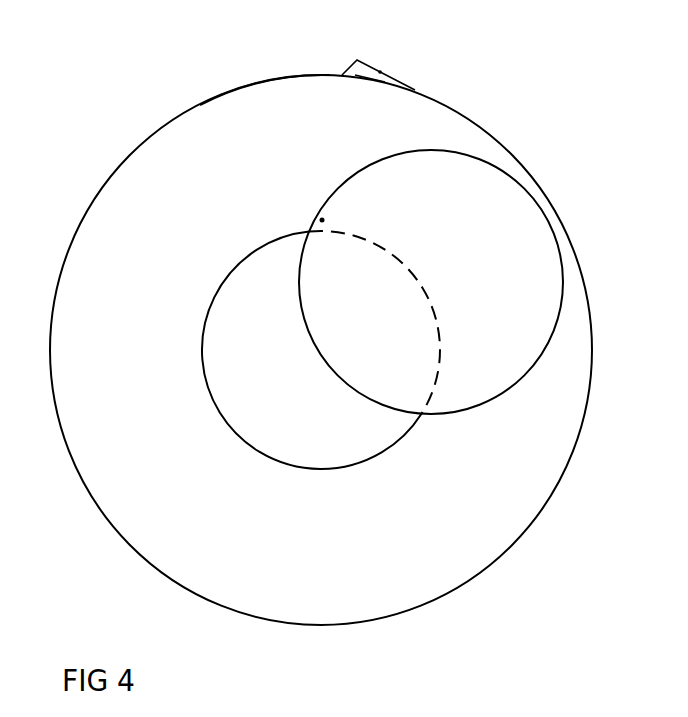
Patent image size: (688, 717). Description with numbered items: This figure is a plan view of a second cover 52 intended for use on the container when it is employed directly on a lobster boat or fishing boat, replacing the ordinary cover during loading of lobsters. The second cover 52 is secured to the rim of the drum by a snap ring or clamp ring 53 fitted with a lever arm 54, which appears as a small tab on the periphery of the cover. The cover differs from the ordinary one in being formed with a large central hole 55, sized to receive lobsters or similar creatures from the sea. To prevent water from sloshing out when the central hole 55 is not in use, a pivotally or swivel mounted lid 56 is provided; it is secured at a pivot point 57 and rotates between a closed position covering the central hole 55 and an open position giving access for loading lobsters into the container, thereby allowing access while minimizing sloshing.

The second cover 52 is at (192, 194).
The snap ring or clamp ring 53 is at (283, 76).
The lever arm 54 is at (373, 63).
The central hole 55 is at (266, 340).
The swivel mounted lid 56 is at (548, 255).
The pivot point 57 is at (321, 219).